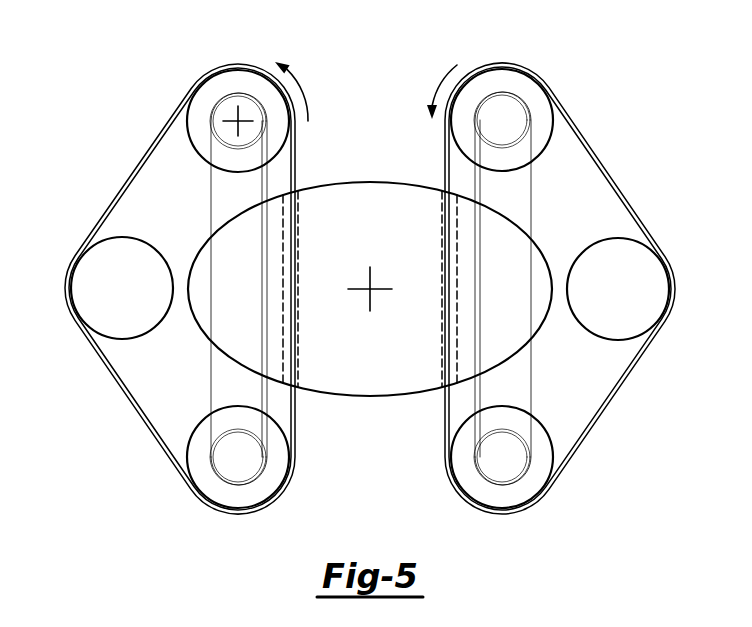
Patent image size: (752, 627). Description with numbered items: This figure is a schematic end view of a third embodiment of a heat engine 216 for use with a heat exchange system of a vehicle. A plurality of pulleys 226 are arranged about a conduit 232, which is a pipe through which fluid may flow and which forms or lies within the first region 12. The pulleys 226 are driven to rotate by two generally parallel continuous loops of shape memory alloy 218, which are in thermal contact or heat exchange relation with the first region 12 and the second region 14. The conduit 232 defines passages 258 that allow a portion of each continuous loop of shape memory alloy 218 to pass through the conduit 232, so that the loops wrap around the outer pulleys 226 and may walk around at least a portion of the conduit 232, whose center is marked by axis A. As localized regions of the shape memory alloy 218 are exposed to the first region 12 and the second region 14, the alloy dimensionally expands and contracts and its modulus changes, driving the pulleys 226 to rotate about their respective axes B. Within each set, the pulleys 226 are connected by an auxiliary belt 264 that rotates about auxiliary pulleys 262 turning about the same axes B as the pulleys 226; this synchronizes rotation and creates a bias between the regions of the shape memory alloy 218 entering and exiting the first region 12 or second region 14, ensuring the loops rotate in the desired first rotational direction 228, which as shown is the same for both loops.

The first region 12 is at (509, 302).
The second region 14 is at (380, 95).
The heat engine 216 is at (170, 76).
The shape memory alloy 218 is at (296, 415).
The pulleys 226 is at (502, 120).
The first rotational direction 228 is at (302, 88).
The conduit 232 is at (402, 182).
The passage 258 is at (298, 323).
The auxiliary pulleys 262 is at (207, 159).
The auxiliary belt 264 is at (207, 217).
The axis A is at (370, 289).
The axes B is at (238, 121).